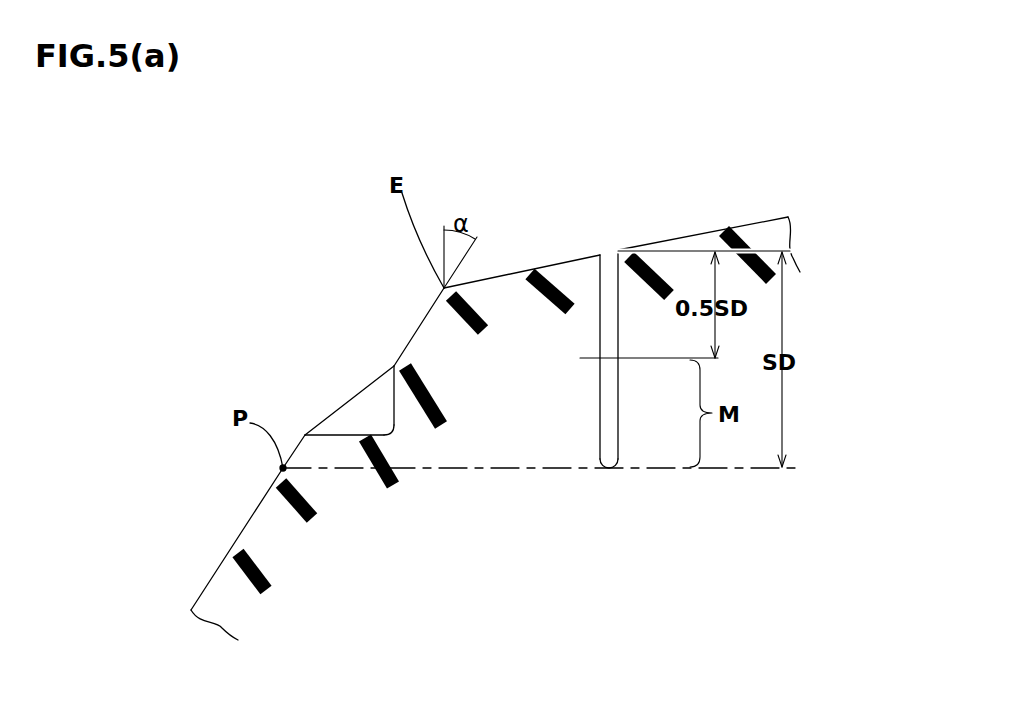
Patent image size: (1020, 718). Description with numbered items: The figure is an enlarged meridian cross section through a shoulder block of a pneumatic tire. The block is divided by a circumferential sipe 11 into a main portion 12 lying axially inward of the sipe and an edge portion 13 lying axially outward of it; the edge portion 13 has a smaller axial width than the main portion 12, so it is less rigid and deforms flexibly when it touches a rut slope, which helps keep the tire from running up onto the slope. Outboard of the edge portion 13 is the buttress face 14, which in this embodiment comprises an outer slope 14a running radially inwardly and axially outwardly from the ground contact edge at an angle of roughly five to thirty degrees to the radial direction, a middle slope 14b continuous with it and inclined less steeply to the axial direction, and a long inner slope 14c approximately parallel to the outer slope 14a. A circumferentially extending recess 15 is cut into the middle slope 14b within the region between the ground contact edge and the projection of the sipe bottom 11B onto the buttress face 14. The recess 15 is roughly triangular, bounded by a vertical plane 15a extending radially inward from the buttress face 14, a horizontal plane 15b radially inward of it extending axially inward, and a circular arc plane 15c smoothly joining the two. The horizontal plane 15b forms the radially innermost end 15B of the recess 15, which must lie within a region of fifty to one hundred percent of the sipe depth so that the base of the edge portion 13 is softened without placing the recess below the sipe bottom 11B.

The circumferential sipe 11 is at (607, 253).
The sipe bottom 11B is at (606, 462).
The main portion 12 is at (723, 213).
The edge portion 13 is at (508, 255).
The buttress face 14 is at (283, 203).
The outer slope 14a is at (428, 333).
The middle slope 14b is at (342, 406).
The inner slope 14c is at (255, 506).
The recess 15 is at (373, 406).
The vertical plane 15a is at (395, 391).
The horizontal plane 15b is at (347, 503).
The radially innermost end 15B is at (346, 436).
The circular arc plane 15c is at (393, 422).